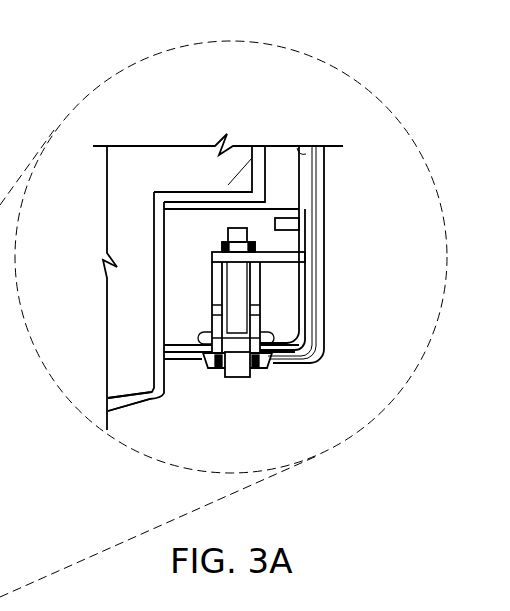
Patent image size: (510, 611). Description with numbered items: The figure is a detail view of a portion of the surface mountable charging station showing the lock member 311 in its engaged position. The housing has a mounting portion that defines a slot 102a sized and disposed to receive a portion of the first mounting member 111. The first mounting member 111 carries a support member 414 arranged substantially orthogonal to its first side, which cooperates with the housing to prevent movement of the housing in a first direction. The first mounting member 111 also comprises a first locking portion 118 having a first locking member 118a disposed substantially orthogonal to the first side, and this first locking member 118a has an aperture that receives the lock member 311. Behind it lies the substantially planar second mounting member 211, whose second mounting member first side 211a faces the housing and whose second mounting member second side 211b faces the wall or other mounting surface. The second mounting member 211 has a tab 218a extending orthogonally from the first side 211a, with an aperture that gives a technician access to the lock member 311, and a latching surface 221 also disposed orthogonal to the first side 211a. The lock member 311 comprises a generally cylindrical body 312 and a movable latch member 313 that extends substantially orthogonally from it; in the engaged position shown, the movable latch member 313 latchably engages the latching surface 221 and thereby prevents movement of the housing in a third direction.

The slot 102a is at (187, 297).
The first mounting member 111 is at (303, 172).
The first locking portion 118 is at (176, 345).
The first locking member 118a is at (187, 353).
The second mounting member 211 is at (316, 145).
The second mounting member first side 211a is at (296, 168).
The second mounting member second side 211b is at (332, 199).
The tab 218a is at (288, 363).
The latching surface 221 is at (284, 227).
The lock member 311 is at (213, 277).
The cylindrical body 312 is at (248, 308).
The movable latch member 313 is at (290, 278).
The support member 414 is at (196, 190).